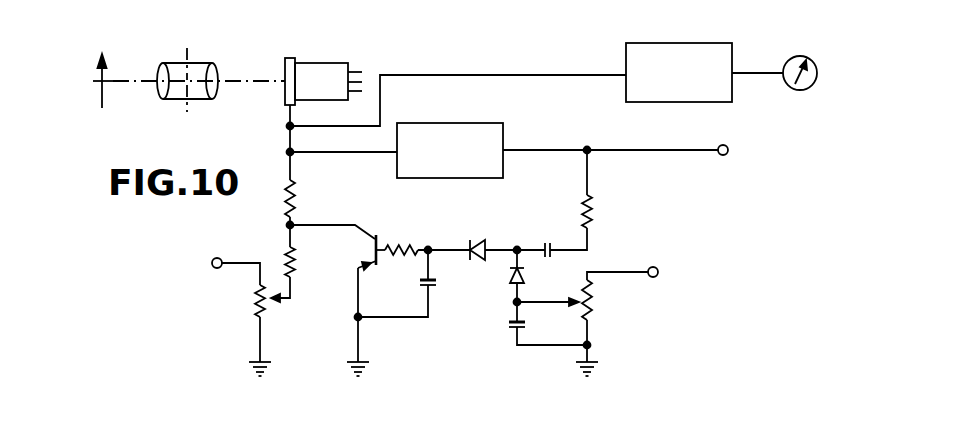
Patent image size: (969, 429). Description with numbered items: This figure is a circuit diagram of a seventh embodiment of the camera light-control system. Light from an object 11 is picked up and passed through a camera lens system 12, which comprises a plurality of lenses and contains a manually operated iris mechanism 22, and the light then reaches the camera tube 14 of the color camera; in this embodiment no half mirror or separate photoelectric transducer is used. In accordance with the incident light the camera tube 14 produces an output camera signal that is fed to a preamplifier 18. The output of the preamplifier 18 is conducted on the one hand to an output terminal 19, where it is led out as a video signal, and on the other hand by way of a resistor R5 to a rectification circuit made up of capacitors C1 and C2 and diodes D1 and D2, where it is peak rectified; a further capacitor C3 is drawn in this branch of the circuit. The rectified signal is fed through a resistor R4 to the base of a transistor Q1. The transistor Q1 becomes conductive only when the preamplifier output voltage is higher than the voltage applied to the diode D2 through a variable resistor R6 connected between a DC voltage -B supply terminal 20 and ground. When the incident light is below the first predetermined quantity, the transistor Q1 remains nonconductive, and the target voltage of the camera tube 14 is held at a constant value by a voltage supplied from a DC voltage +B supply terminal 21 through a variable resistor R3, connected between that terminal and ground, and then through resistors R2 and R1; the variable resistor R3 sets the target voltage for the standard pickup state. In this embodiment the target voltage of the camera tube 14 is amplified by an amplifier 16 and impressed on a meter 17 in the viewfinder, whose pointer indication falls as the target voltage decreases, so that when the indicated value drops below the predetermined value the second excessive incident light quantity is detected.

The object 11 is at (105, 62).
The camera lens system 12 is at (200, 63).
The camera tube 14 is at (325, 63).
The amplifier 16 is at (700, 43).
The meter 17 is at (802, 55).
The preamplifier 18 is at (467, 123).
The output terminal 19 is at (731, 153).
The DC voltage -B supply terminal 20 is at (650, 267).
The DC voltage +B supply terminal 21 is at (218, 258).
The iris mechanism 22 is at (187, 112).
The resistor R1 is at (302, 198).
The resistor R2 is at (296, 274).
The variable resistor R3 is at (246, 319).
The resistor R4 is at (427, 238).
The resistor R5 is at (600, 189).
The variable resistor R6 is at (612, 324).
The capacitor C1 is at (410, 283).
The capacitor C2 is at (564, 238).
The capacitor C3 is at (542, 325).
The diode D1 is at (507, 239).
The diode D2 is at (544, 286).
The transistor Q1 is at (337, 300).